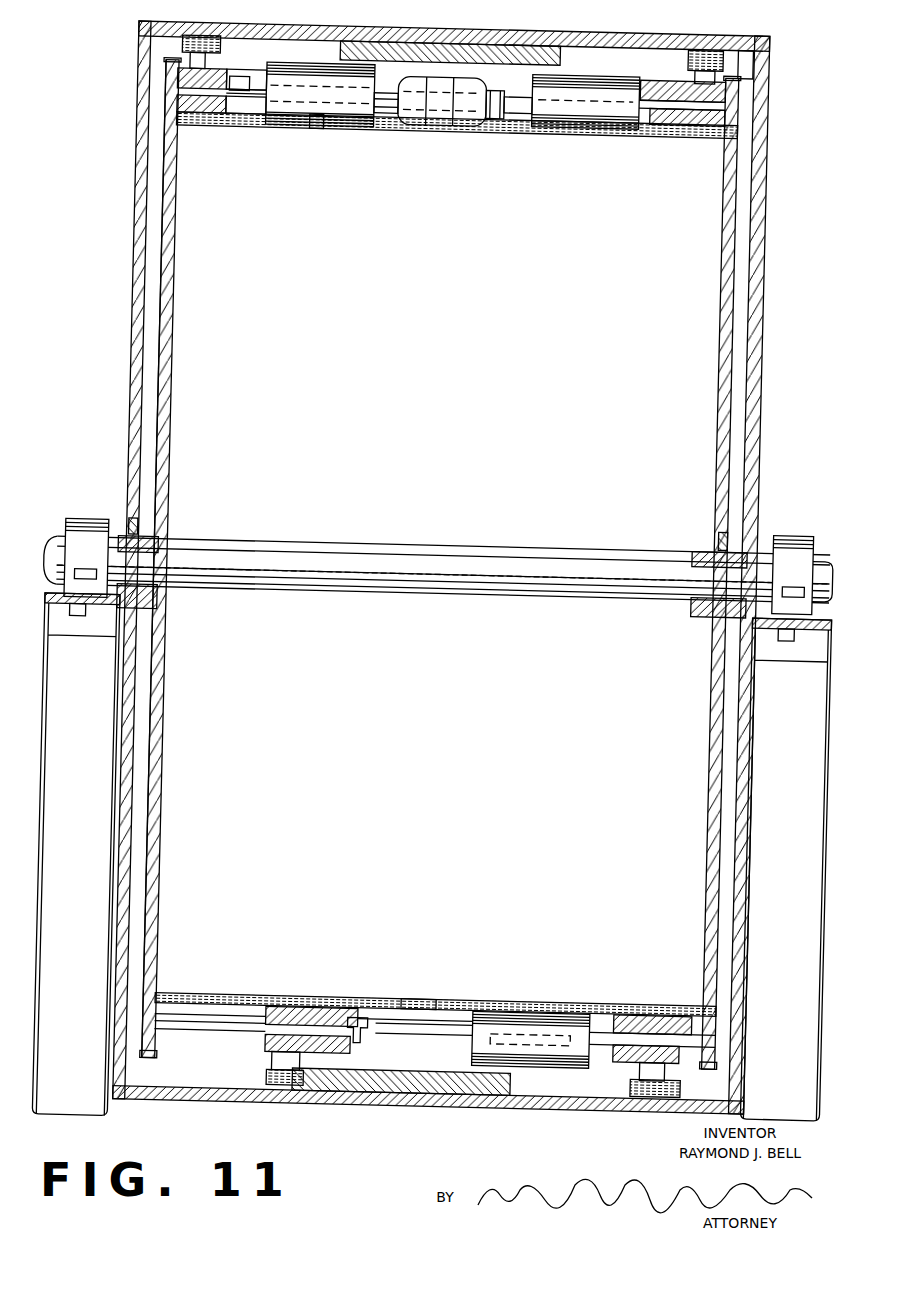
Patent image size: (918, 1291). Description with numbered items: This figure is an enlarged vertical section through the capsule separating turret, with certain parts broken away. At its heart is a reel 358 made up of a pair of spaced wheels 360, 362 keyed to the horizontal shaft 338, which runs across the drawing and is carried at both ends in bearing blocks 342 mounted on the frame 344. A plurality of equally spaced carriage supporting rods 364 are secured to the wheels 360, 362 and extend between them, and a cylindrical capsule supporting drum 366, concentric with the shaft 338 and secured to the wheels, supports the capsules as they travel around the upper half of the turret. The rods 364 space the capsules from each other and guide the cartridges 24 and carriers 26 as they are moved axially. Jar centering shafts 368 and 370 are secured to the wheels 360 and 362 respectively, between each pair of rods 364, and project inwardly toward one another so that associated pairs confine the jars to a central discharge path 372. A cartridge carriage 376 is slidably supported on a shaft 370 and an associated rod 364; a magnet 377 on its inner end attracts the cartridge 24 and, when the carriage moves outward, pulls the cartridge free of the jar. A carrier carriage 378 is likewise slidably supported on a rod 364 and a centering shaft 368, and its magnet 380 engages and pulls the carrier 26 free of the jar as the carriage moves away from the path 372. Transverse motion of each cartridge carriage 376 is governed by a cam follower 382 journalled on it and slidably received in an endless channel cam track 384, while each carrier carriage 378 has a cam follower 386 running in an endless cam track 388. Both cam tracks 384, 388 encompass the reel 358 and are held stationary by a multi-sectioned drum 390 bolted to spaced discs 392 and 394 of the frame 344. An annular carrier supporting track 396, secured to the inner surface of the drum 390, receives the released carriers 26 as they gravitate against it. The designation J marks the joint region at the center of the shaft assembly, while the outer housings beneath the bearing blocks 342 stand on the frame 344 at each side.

The cartridge 24 is at (556, 571).
The carrier 26 is at (298, 144).
The nut J is at (490, 91).
The shaft 338 is at (436, 555).
The bearing block 342 is at (449, 544).
The frame 344 is at (76, 854).
The reel 358 is at (186, 559).
The wheel 360 is at (186, 558).
The wheel 362 is at (759, 572).
The carriage supporting rod 364 is at (447, 565).
The capsule supporting drum 366 is at (447, 538).
The jar centering shaft 368 is at (442, 589).
The jar centering shaft 370 is at (669, 586).
The central discharge path 372 is at (428, 543).
The cartridge carriage 376 is at (669, 557).
The magnet 377 is at (648, 574).
The carrier carriage 378 is at (268, 547).
The magnet 380 is at (377, 1043).
The cam follower 382 is at (680, 575).
The endless channel cam track 384 is at (708, 579).
The cam follower 386 is at (243, 560).
The endless cam track 388 is at (203, 550).
The multi-sectioned drum 390 is at (526, 94).
The disc 392 is at (173, 560).
The disc 394 is at (775, 575).
The annular carrier supporting track 396 is at (441, 579).